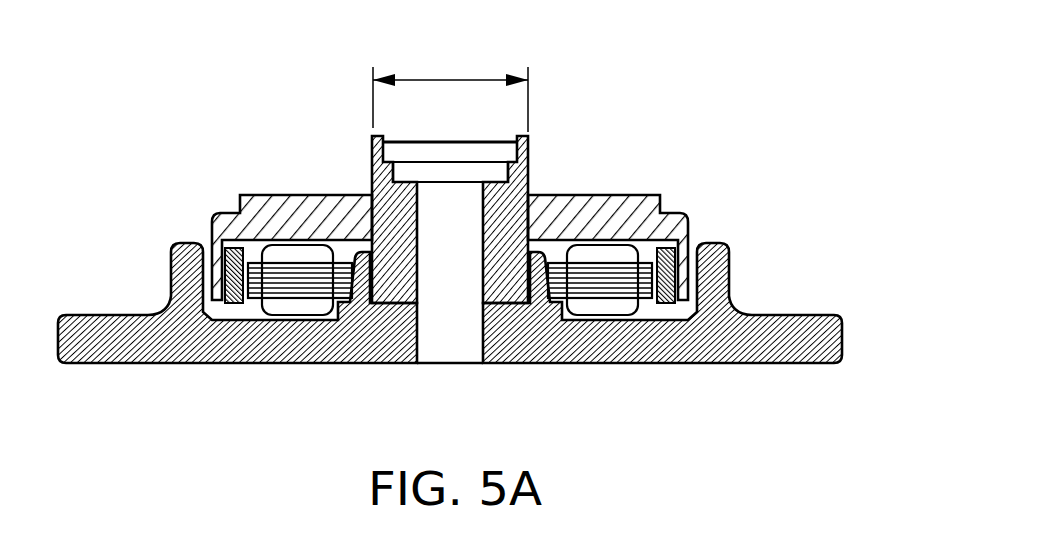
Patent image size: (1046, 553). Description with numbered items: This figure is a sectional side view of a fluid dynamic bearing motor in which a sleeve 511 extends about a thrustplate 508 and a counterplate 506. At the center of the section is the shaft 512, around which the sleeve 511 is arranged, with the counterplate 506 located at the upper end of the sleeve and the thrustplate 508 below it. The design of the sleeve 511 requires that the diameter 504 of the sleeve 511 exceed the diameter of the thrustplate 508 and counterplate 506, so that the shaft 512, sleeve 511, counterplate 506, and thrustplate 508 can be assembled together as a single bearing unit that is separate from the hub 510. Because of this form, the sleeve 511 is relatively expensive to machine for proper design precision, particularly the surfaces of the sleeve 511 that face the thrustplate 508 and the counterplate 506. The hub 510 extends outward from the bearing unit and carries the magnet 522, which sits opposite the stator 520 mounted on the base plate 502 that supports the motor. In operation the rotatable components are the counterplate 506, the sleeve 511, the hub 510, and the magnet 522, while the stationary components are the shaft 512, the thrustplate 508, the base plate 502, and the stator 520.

The base plate 502 is at (677, 337).
The diameter 504 is at (453, 78).
The counterplate 506 is at (425, 152).
The thrustplate 508 is at (427, 177).
The hub 510 is at (617, 197).
The sleeve 511 is at (530, 182).
The shaft 512 is at (467, 273).
The stator 520 is at (597, 310).
The magnet 522 is at (688, 245).